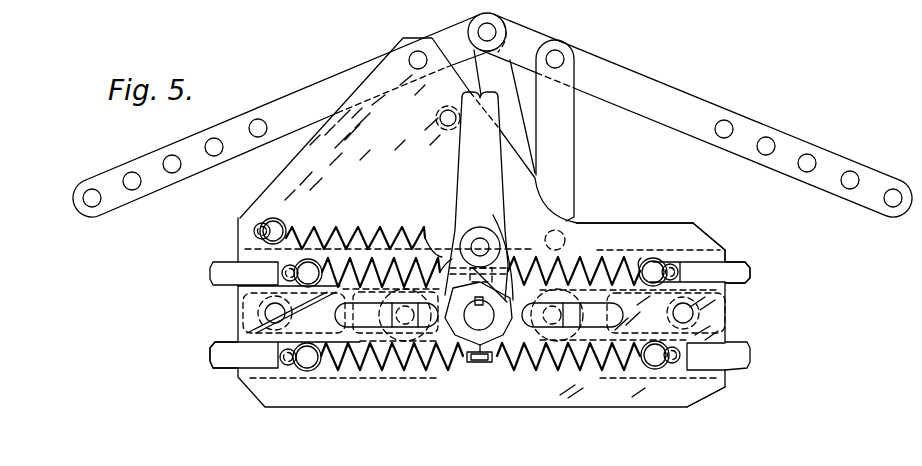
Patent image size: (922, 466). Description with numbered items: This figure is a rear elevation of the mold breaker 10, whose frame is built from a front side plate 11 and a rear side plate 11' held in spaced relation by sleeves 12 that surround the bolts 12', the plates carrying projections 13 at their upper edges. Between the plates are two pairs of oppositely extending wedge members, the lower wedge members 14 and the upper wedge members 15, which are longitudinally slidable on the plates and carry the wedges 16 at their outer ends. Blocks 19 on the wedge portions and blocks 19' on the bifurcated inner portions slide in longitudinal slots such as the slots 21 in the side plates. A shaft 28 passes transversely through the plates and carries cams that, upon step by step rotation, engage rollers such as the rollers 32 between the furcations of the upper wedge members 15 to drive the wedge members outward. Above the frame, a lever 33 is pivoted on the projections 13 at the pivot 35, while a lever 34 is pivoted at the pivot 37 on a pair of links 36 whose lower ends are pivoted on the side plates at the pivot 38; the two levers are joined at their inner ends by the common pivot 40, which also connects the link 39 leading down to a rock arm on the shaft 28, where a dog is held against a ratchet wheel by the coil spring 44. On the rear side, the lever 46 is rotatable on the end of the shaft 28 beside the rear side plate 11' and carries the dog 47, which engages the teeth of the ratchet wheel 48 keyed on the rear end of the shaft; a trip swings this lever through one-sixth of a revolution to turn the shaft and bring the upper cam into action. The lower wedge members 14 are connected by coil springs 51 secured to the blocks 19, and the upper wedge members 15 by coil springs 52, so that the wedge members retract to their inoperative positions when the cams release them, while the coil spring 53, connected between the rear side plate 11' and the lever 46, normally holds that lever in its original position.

The mold breaker 10 is at (232, 228).
The front side plate 11 is at (709, 125).
The rear side plate 11' is at (507, 116).
The sleeves 12 is at (748, 281).
The bolts 12' is at (684, 313).
The projections 13 is at (362, 98).
The lower wedge members 14 is at (693, 387).
The upper wedge members 15 is at (628, 253).
The wedges 16 is at (224, 360).
The blocks 19 is at (279, 335).
The blocks 19' is at (461, 212).
The longitudinal slots 21 is at (655, 131).
The shaft 28 is at (476, 324).
The rollers 32 is at (590, 371).
The lever 33 is at (277, 112).
The lever 34 is at (670, 96).
The pivot 35 is at (418, 52).
The links 36 is at (567, 130).
The pivot 37 is at (563, 59).
The pivot 38 is at (578, 216).
The link 39 is at (497, 72).
The common pivot 40 is at (491, 27).
The coil spring 44 is at (430, 65).
The lever 46 is at (455, 188).
The dog 47 is at (499, 230).
The ratchet wheel 48 is at (462, 330).
The coil springs 51 is at (347, 364).
The coil springs 52 is at (641, 258).
The coil spring 53 is at (344, 228).